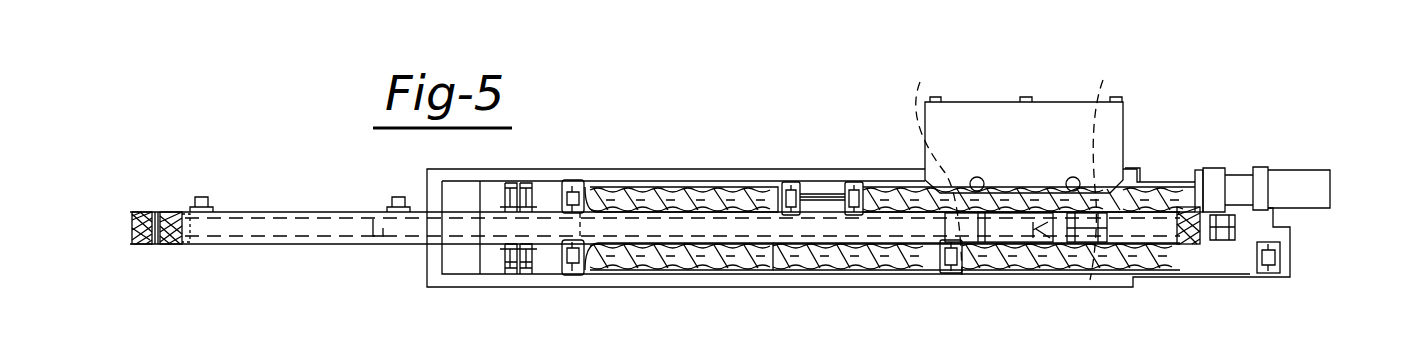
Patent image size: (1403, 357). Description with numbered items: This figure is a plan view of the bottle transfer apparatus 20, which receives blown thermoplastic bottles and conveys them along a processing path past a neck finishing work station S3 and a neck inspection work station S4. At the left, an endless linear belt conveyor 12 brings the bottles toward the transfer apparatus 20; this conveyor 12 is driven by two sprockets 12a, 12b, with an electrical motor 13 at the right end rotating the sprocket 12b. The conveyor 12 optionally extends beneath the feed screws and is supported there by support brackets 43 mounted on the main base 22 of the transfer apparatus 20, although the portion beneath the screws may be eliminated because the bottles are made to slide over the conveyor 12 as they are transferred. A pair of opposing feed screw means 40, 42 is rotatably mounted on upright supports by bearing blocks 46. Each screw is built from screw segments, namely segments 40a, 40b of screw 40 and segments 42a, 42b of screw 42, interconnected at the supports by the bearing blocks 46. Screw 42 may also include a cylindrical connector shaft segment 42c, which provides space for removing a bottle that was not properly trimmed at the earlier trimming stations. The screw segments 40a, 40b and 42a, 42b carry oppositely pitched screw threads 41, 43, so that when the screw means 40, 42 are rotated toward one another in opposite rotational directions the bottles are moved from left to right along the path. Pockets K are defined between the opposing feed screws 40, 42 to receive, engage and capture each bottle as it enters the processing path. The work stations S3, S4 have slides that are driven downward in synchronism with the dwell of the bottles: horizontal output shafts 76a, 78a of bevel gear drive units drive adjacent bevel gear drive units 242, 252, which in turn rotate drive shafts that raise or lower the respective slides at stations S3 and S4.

The endless linear belt conveyor 12 is at (260, 228).
The sprocket 12a is at (163, 245).
The sprocket 12b is at (1223, 247).
The electrical motor 13 is at (1306, 170).
The transfer apparatus 20 is at (828, 158).
The main base 22 is at (892, 277).
The feed screw means 40 is at (923, 257).
The screw segment 40a is at (800, 265).
The screw segment 40b is at (1037, 257).
The screw thread 41 is at (655, 272).
The feed screw means 42 is at (890, 190).
The screw segment 42a is at (778, 132).
The screw segment 42b is at (1157, 193).
The cylindrical connector shaft segment 42c is at (823, 190).
The screw thread 43 is at (665, 190).
The bearing block 46 is at (580, 192).
The horizontal output shaft 76a is at (975, 230).
The horizontal output shaft 78a is at (1090, 287).
The bevel gear drive unit 242 is at (943, 168).
The bevel gear drive unit 252 is at (1120, 170).
The neck finishing work station S3 is at (975, 177).
The neck inspection work station S4 is at (1055, 177).
The pocket K is at (913, 245).